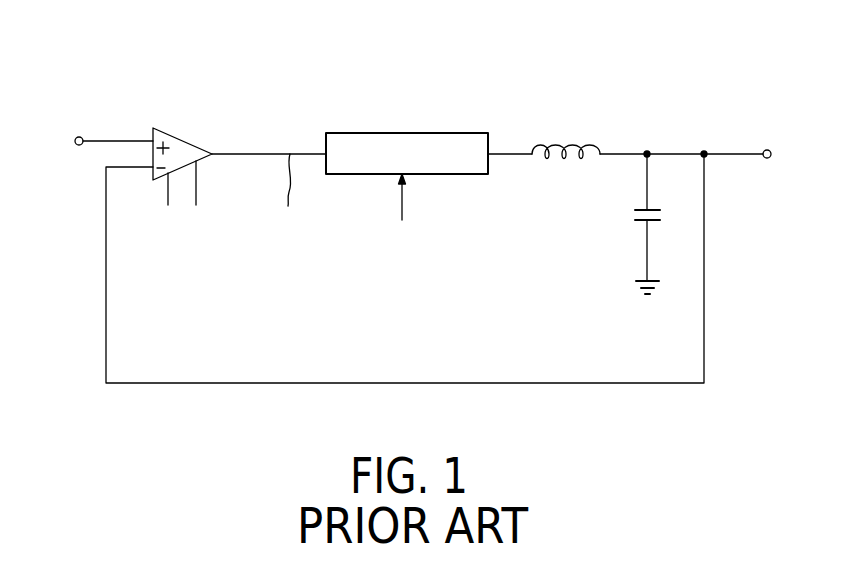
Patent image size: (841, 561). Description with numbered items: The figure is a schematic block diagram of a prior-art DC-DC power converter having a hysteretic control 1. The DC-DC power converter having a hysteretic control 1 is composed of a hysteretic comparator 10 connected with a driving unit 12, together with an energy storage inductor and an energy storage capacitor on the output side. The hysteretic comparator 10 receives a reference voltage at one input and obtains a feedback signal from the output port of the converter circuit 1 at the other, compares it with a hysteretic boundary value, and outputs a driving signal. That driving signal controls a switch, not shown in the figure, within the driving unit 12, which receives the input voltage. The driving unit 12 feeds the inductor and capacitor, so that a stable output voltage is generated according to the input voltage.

The DC-DC power converter having a hysteretic control 1 is at (746, 44).
The hysteretic comparator 10 is at (183, 140).
The driving unit 12 is at (404, 133).